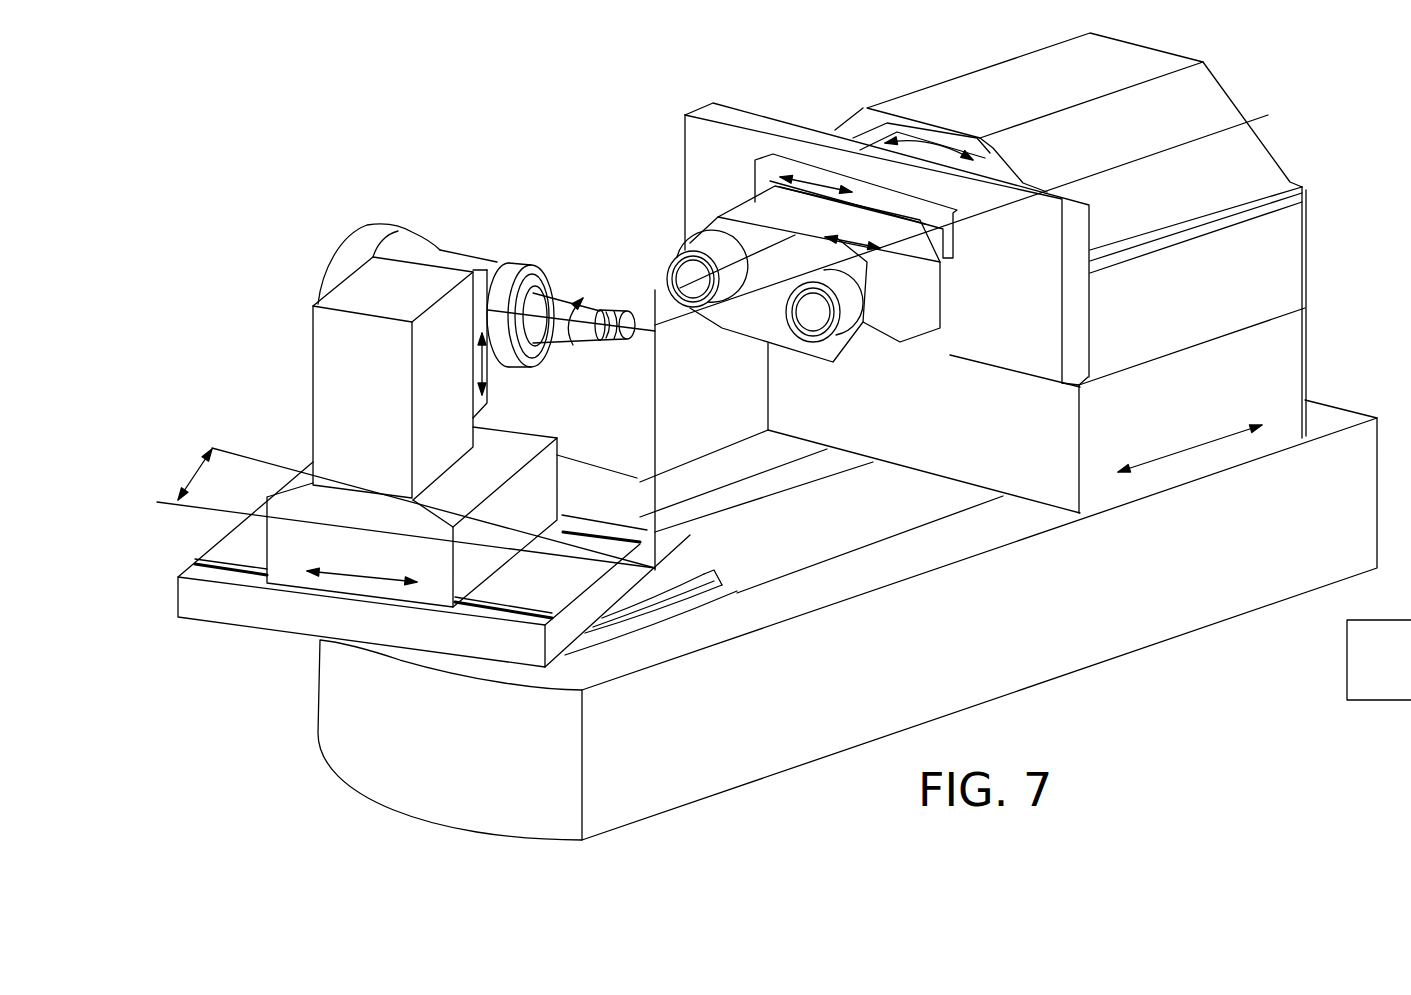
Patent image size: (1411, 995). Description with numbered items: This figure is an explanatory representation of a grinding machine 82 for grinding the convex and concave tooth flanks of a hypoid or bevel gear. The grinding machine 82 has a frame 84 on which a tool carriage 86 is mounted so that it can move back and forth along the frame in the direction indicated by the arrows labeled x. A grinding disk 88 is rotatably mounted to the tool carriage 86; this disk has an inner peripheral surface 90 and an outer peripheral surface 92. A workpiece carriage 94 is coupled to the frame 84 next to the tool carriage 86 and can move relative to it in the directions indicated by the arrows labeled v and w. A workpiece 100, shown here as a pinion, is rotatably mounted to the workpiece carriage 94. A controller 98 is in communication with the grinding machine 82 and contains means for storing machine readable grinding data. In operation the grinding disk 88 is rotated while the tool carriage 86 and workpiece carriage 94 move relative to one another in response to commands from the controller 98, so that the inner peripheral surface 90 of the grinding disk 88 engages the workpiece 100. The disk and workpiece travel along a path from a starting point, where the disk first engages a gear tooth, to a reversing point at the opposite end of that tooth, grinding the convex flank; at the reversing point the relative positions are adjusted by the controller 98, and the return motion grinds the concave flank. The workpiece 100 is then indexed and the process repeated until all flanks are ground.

The grinding machine 82 is at (767, 427).
The frame 84 is at (1070, 622).
The tool carriage 86 is at (1017, 93).
The grinding disk 88 is at (666, 259).
The inner peripheral surface 90 is at (667, 287).
The outer peripheral surface 92 is at (776, 266).
The workpiece carriage 94 is at (333, 402).
The controller 98 is at (1263, 600).
The workpiece 100 is at (612, 338).